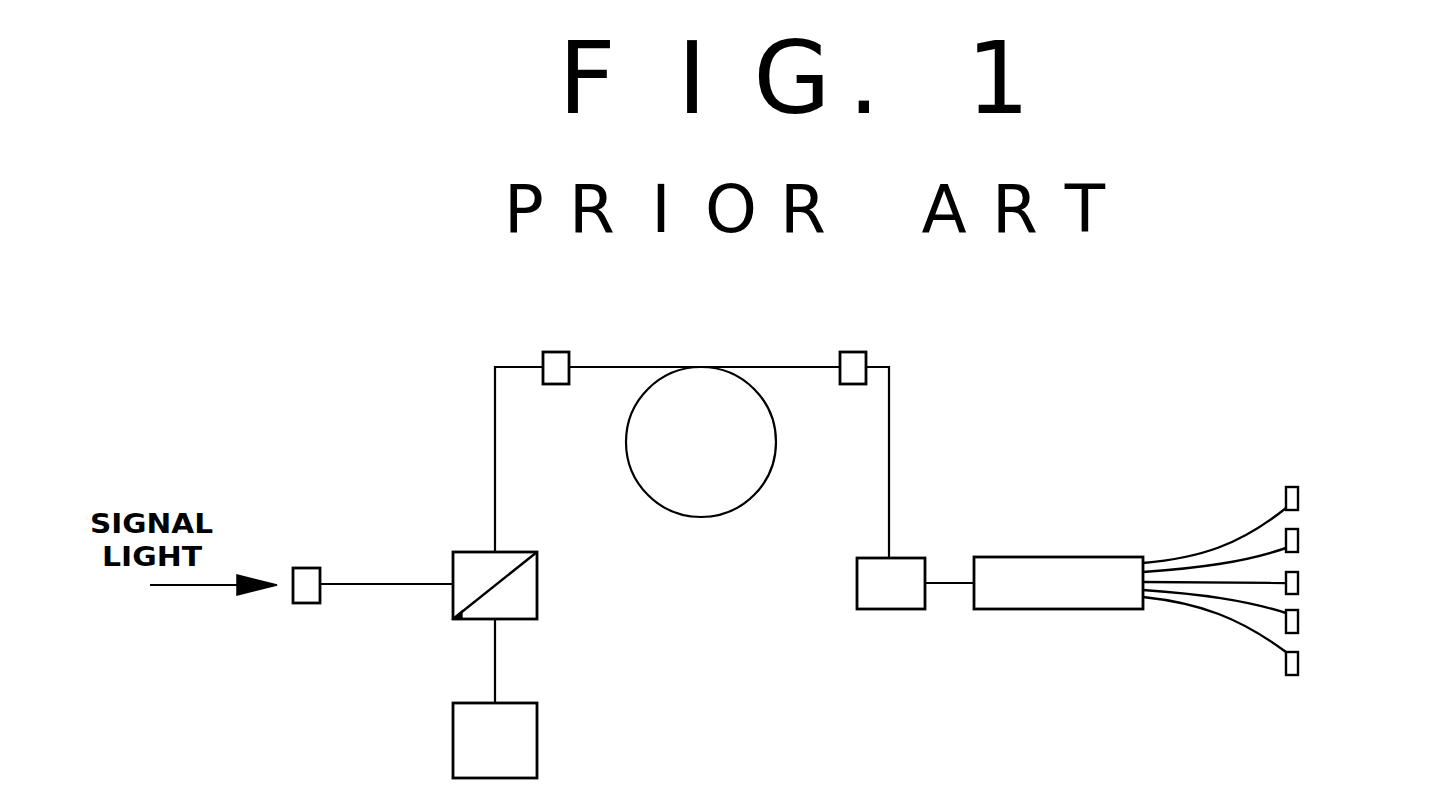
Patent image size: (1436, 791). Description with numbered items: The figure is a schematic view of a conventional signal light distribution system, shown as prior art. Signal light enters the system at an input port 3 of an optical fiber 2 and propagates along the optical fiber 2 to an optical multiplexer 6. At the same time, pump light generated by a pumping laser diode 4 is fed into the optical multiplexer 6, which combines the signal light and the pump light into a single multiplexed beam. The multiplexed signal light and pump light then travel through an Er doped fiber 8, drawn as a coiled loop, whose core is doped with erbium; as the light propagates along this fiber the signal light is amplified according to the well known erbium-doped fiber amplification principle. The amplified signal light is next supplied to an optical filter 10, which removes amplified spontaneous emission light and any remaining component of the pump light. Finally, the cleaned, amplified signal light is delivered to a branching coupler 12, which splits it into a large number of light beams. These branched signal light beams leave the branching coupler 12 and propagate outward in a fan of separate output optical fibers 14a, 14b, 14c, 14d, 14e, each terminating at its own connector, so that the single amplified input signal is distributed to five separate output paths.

The optical fiber 2 is at (347, 586).
The input port 3 is at (307, 568).
The pumping laser diode 4 is at (537, 735).
The optical multiplexer 6 is at (537, 592).
The Er doped fiber 8 is at (598, 367).
The optical filter 10 is at (874, 609).
The branching coupler 12 is at (1025, 609).
The optical fiber 14a is at (1247, 537).
The optical fiber 14b is at (1268, 548).
The optical fiber 14c is at (1262, 583).
The optical fiber 14d is at (1268, 615).
The optical fiber 14e is at (1250, 635).